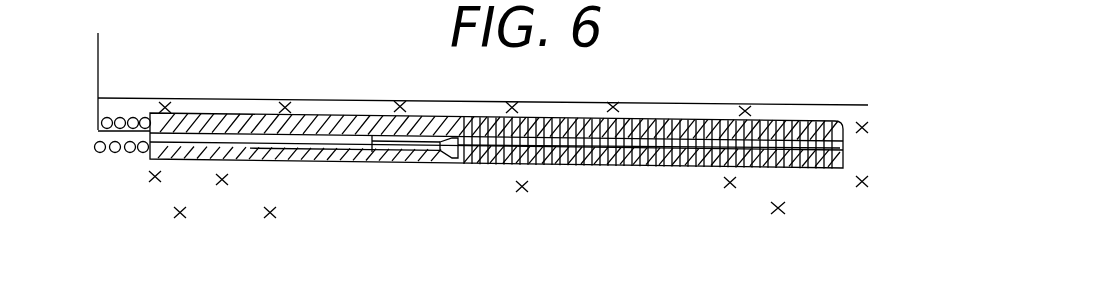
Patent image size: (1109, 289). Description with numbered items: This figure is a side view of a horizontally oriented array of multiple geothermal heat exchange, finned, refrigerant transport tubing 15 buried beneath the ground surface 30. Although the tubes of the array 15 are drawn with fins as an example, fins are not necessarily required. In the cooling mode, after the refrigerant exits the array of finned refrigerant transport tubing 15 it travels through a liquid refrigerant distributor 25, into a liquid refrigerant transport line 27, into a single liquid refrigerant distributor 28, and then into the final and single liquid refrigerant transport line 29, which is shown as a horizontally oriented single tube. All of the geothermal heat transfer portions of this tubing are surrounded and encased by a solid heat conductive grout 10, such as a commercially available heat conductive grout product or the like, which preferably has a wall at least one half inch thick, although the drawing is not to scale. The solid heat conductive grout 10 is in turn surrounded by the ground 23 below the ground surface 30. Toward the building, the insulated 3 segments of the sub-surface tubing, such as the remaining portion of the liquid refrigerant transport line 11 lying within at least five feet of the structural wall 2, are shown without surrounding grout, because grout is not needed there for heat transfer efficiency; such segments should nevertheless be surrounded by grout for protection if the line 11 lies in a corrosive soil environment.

The structural wall 2 is at (95, 62).
The insulation 3 is at (122, 117).
The solid heat conductive grout 10 is at (227, 120).
The liquid refrigerant transport line 11 is at (138, 135).
The array of finned refrigerant transport tubing 15 is at (627, 165).
The ground 23 is at (786, 208).
The liquid refrigerant distributor 25 is at (446, 158).
The liquid refrigerant transport line 27 is at (403, 142).
The single liquid refrigerant distributor 28 is at (368, 160).
The final single liquid refrigerant transport line 29 is at (324, 143).
The ground surface 30 is at (707, 102).